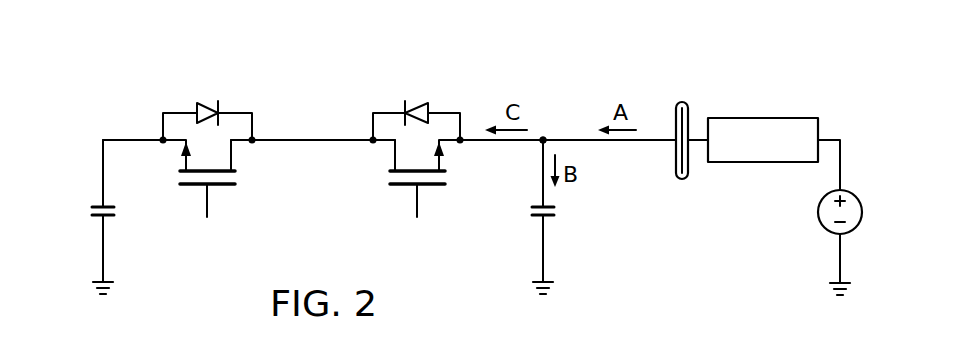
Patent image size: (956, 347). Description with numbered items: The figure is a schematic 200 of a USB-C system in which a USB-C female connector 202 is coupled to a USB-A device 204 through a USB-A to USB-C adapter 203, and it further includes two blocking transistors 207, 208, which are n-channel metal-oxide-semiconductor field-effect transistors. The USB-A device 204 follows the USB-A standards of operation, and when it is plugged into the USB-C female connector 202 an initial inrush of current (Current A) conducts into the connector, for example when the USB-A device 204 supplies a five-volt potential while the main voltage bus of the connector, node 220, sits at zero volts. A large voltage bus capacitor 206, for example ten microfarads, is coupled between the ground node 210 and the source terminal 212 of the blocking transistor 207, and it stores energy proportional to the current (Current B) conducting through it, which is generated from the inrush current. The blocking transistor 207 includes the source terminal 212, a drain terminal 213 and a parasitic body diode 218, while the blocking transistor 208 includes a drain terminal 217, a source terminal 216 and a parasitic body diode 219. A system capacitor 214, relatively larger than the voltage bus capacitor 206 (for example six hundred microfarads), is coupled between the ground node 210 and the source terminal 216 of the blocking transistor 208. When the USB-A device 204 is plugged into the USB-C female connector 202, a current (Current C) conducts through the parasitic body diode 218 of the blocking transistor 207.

The schematic 200 is at (131, 64).
The USB-C female connector 202 is at (675, 157).
The USB-A to USB-C adapter 203 is at (762, 118).
The USB-A device 204 is at (862, 212).
The voltage bus capacitor 206 is at (557, 213).
The blocking transistor 207 is at (441, 212).
The blocking transistor 208 is at (184, 212).
The ground node 210 is at (92, 285).
The source terminal 212 is at (442, 160).
The drain terminal 213 is at (393, 157).
The system capacitor 214 is at (90, 210).
The source terminal 216 is at (182, 160).
The drain terminal 217 is at (234, 157).
The parasitic body diode 218 is at (418, 103).
The parasitic body diode 219 is at (207, 103).
The node 220 is at (548, 137).